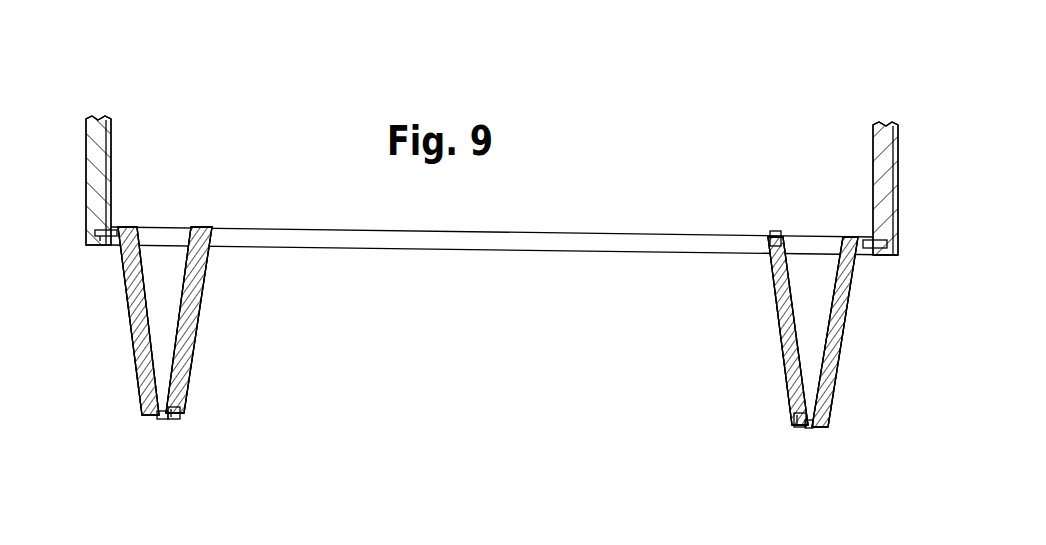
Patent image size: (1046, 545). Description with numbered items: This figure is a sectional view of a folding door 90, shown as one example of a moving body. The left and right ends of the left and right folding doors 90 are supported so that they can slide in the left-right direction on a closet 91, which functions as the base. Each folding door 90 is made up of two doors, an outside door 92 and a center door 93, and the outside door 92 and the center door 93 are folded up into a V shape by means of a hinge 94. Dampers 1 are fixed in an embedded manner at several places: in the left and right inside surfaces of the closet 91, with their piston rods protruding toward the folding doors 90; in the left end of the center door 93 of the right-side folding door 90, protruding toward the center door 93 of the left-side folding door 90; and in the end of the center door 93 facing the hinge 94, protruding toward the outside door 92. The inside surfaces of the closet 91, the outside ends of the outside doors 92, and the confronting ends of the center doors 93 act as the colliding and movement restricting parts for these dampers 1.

The damper 1 is at (113, 228).
The folding door 90 is at (487, 362).
The closet 91 is at (895, 128).
The outside door 92 is at (133, 336).
The center door 93 is at (193, 334).
The hinge 94 is at (162, 416).